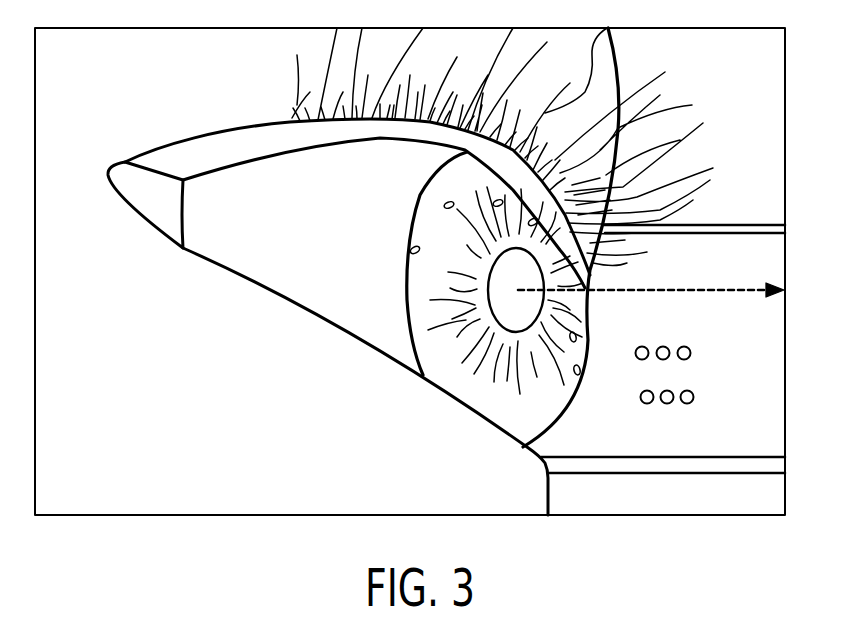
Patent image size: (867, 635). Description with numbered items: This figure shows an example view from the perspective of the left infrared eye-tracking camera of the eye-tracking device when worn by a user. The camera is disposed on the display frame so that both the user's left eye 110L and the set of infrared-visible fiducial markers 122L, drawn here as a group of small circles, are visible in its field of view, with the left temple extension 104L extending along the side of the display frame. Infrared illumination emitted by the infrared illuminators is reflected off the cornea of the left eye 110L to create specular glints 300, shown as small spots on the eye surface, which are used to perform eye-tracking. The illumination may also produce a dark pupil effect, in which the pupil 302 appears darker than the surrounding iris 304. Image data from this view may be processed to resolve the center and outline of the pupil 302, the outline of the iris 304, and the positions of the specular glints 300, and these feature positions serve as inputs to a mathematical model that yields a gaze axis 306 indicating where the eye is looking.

The left eye 110L is at (240, 242).
The left temple extension 104L is at (741, 222).
The set of infrared-visible fiducial markers 122L is at (674, 428).
The specular glints 300 is at (521, 208).
The pupil 302 is at (500, 280).
The iris 304 is at (426, 318).
The gaze axis 306 is at (732, 292).